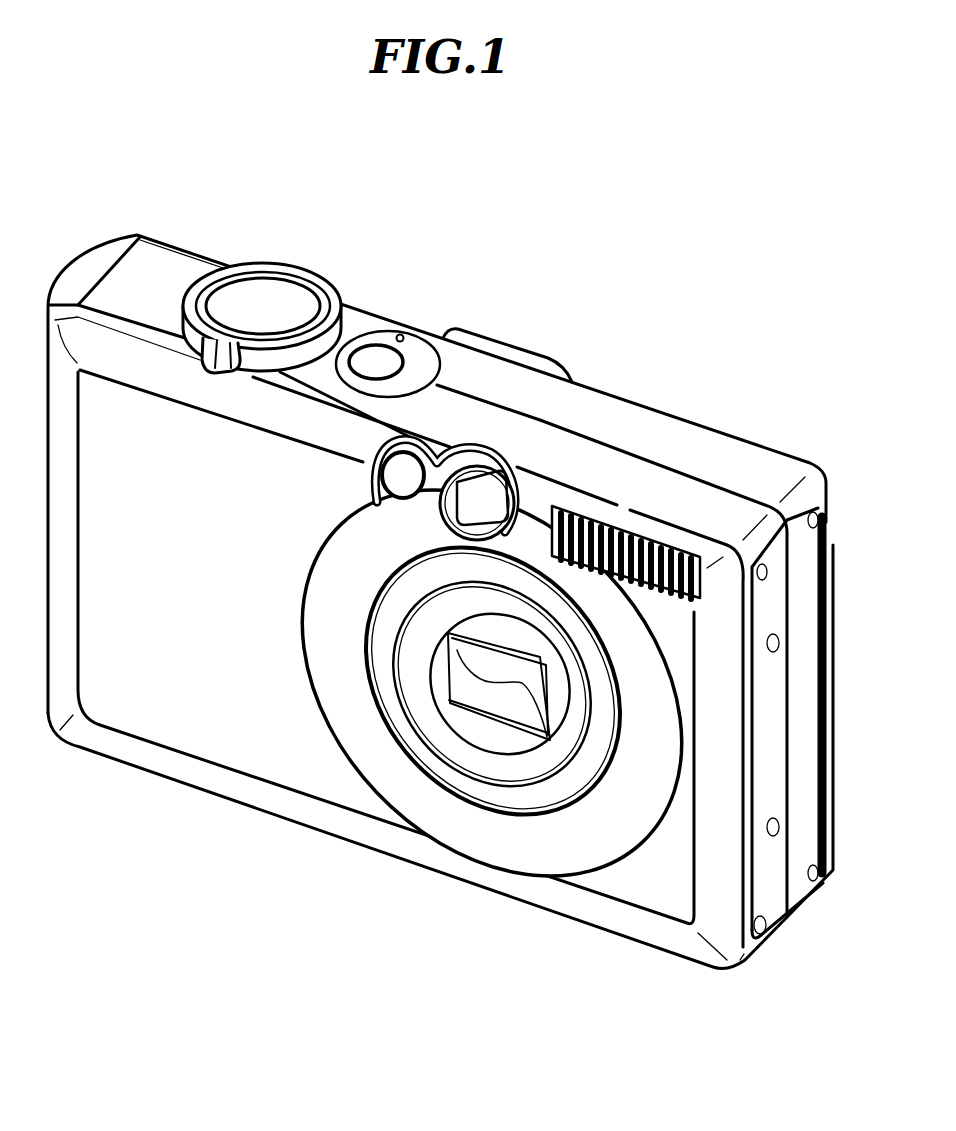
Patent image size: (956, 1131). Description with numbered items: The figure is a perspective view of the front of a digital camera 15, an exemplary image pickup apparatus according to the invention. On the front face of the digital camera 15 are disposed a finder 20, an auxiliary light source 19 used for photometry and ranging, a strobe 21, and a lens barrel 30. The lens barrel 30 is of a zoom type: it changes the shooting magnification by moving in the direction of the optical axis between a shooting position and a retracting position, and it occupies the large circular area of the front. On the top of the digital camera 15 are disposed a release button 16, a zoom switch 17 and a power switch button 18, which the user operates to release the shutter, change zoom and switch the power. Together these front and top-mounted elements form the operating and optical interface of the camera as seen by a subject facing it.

The digital camera 15 is at (227, 738).
The release button 16 is at (272, 288).
The zoom switch 17 is at (327, 292).
The power switch button 18 is at (373, 357).
The auxiliary light source 19 is at (407, 470).
The finder 20 is at (481, 493).
The strobe 21 is at (625, 517).
The lens barrel 30 is at (498, 762).